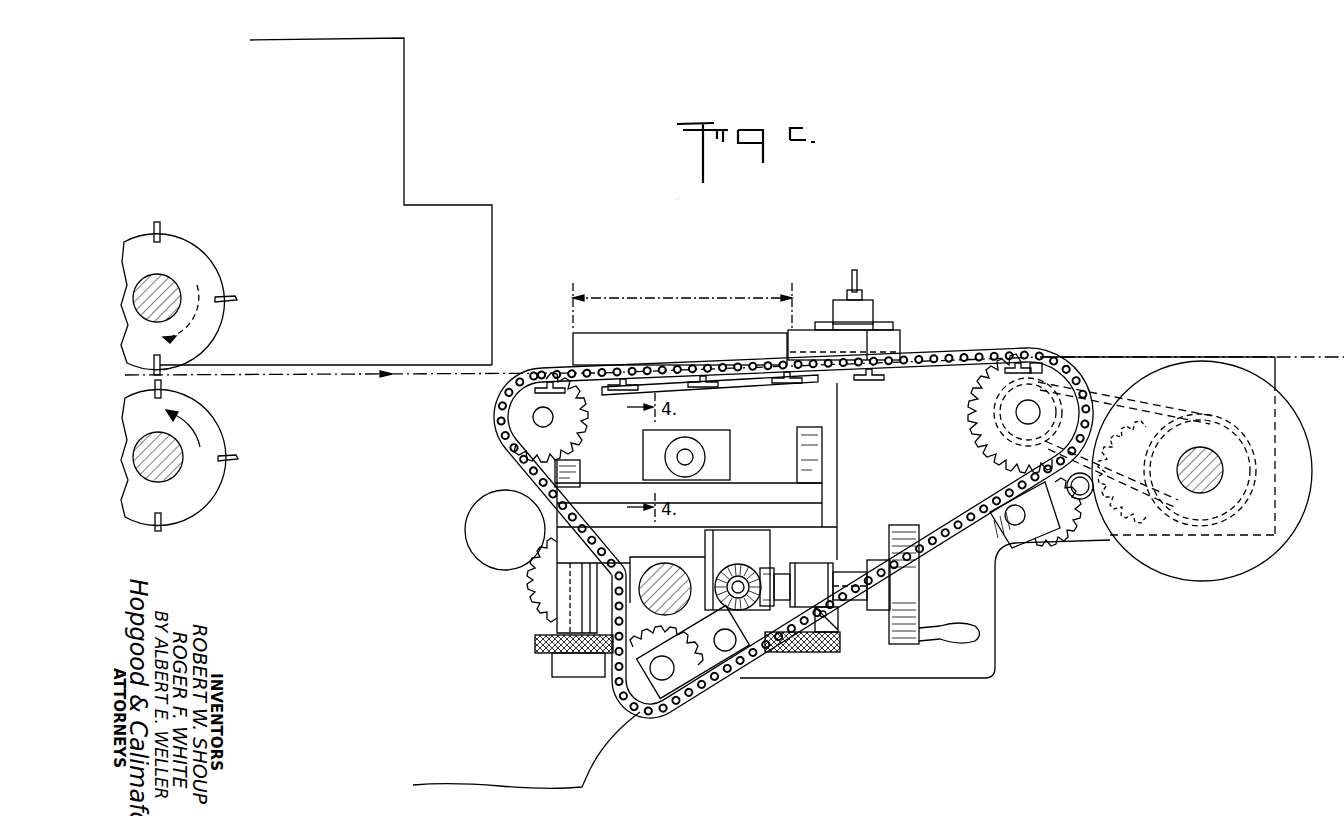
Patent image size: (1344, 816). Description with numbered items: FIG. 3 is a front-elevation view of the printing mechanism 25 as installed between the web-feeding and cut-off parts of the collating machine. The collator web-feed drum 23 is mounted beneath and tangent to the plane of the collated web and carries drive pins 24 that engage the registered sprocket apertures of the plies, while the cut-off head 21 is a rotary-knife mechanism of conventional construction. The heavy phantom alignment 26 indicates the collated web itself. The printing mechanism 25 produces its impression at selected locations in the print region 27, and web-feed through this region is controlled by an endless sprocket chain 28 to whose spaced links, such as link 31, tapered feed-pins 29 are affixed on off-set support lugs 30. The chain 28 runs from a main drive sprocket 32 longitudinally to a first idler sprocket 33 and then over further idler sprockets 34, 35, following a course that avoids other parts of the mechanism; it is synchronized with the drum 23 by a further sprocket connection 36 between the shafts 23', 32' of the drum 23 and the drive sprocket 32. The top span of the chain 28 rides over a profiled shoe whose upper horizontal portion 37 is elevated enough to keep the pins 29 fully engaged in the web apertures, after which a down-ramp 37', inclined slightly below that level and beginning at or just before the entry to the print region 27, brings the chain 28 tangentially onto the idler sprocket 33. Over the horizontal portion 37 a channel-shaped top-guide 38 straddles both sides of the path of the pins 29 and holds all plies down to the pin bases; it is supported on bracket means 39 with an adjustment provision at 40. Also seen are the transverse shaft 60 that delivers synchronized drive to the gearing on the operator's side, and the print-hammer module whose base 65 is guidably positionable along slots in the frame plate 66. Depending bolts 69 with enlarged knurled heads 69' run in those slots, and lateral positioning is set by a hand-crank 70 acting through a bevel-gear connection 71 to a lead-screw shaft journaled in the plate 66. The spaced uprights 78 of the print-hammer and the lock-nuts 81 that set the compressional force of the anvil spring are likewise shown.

The cut-off head 21 is at (213, 252).
The collator web-feed drum 23 is at (1212, 471).
The drum shaft 23' is at (1200, 457).
The drive pins 24 is at (1276, 362).
The printing mechanism 25 is at (570, 362).
The phantom alignment 26 is at (1138, 357).
The print region 27 is at (690, 300).
The endless sprocket chain 28 is at (990, 354).
The tapered feed-pins 29 is at (1036, 356).
The off-set support lug 30 is at (1006, 384).
The chain link 31 is at (1018, 352).
The main drive sprocket 32 is at (994, 413).
The drive sprocket shaft 32' is at (1008, 427).
The first idler sprocket 33 is at (578, 432).
The idler sprocket 34 is at (528, 580).
The idler sprocket 35 is at (668, 714).
The sprocket connection 36 is at (1118, 400).
The upper horizontal shoe portion 37 is at (709, 389).
The down-ramp 37' is at (710, 394).
The top-guide 38 is at (794, 330).
The bracket means 39 is at (862, 310).
The adjustment provision 40 is at (856, 270).
The shaft 60 is at (672, 564).
The module base 65 is at (760, 515).
The frame plate 66 is at (842, 542).
The bolts 69 is at (510, 530).
The knurled heads 69' is at (670, 651).
The hand-crank 70 is at (920, 588).
The bevel-gear connection 71 is at (746, 566).
The uprights 78 is at (580, 468).
The lock-nuts 81 is at (703, 462).